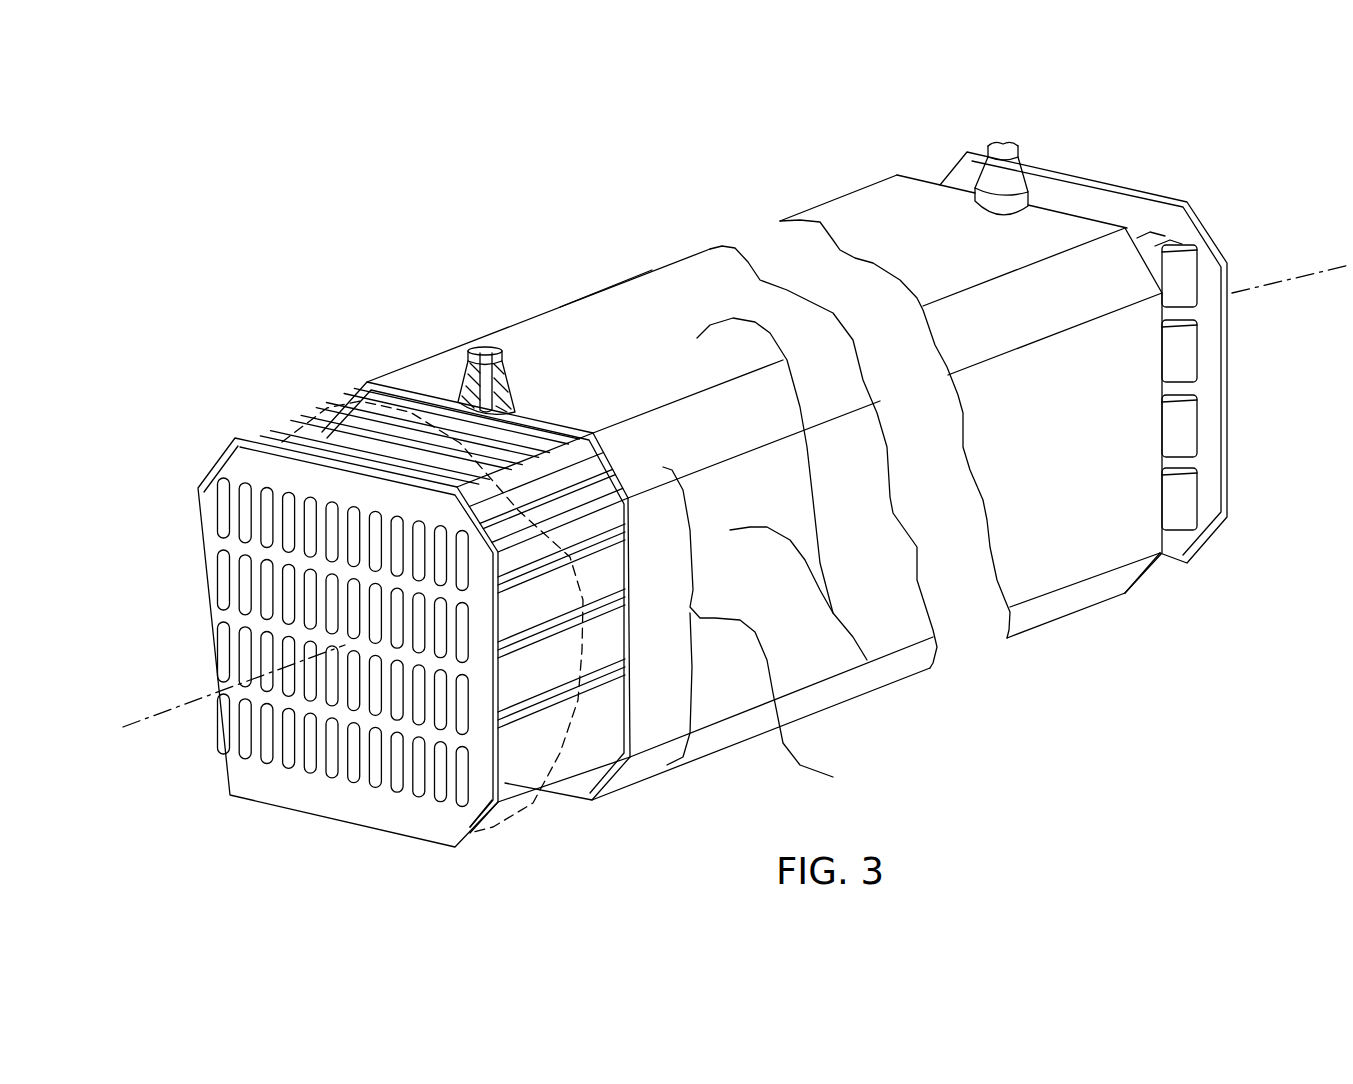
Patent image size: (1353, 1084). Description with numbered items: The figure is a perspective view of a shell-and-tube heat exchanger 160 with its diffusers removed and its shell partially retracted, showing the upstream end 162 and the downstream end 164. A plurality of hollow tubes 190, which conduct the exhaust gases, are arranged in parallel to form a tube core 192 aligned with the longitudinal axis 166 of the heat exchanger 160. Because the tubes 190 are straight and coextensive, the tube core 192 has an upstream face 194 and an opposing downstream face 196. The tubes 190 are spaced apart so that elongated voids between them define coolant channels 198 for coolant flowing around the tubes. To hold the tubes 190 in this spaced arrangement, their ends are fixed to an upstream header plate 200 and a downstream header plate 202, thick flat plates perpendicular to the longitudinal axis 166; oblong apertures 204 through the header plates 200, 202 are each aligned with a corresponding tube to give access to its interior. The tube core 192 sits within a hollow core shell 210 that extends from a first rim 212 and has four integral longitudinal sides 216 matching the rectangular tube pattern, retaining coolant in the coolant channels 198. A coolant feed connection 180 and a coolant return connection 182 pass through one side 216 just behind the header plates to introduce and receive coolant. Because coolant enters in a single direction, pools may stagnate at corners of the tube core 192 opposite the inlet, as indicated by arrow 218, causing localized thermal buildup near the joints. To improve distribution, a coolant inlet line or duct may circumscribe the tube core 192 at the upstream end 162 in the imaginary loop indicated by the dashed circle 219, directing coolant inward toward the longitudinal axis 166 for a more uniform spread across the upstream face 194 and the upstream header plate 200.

The heat exchanger 160 is at (745, 214).
The upstream end 162 is at (313, 824).
The downstream end 164 is at (1178, 632).
The longitudinal axis 166 is at (178, 695).
The coolant feed connection 180 is at (503, 360).
The coolant return connection 182 is at (1010, 148).
The hollow tubes 190 is at (373, 440).
The tube core 192 is at (772, 626).
The upstream face 194 is at (262, 437).
The downstream face 196 is at (1188, 247).
The coolant channels 198 is at (607, 555).
The upstream header plate 200 is at (296, 793).
The downstream header plate 202 is at (1128, 212).
The apertures 204 is at (455, 780).
The core shell 210 is at (652, 270).
The first rim 212 is at (355, 393).
The longitudinal sides 216 is at (867, 660).
The arrow 218 is at (505, 822).
The dashed circle 219 is at (533, 803).